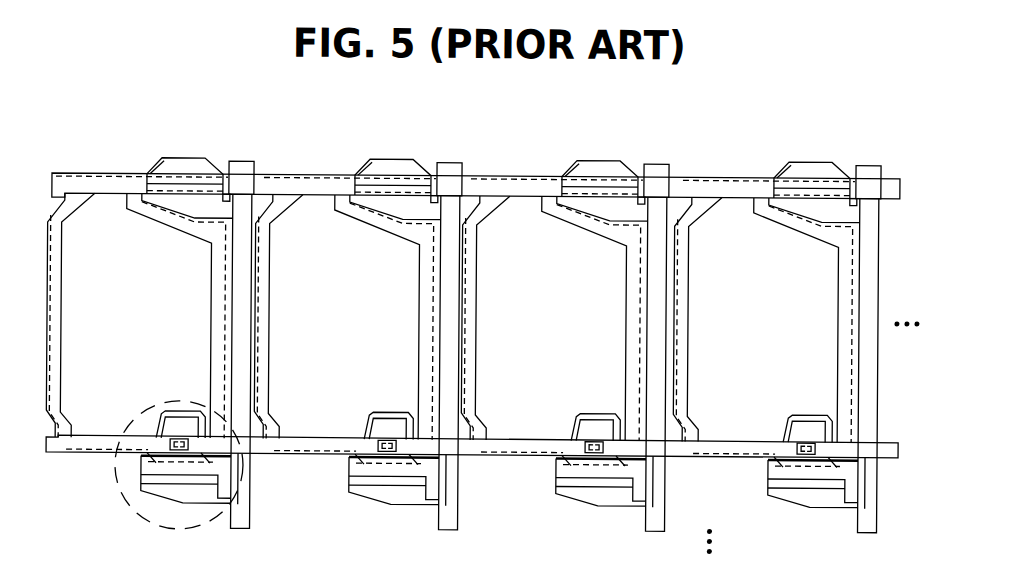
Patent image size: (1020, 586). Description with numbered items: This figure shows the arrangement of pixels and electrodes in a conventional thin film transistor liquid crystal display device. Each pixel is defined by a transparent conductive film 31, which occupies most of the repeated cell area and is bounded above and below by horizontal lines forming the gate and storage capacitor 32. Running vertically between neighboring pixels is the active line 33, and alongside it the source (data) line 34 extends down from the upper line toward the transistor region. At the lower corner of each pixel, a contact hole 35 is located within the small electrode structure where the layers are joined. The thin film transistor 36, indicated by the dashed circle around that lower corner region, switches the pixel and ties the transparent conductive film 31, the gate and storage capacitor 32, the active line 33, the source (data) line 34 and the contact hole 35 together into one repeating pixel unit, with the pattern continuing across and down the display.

The transparent conductive film 31 is at (153, 320).
The gate and storage capacitor 32 is at (58, 183).
The active line 33 is at (243, 160).
The source (data) line 34 is at (254, 168).
The contact hole 35 is at (158, 447).
The thin film transistor 36 is at (195, 528).